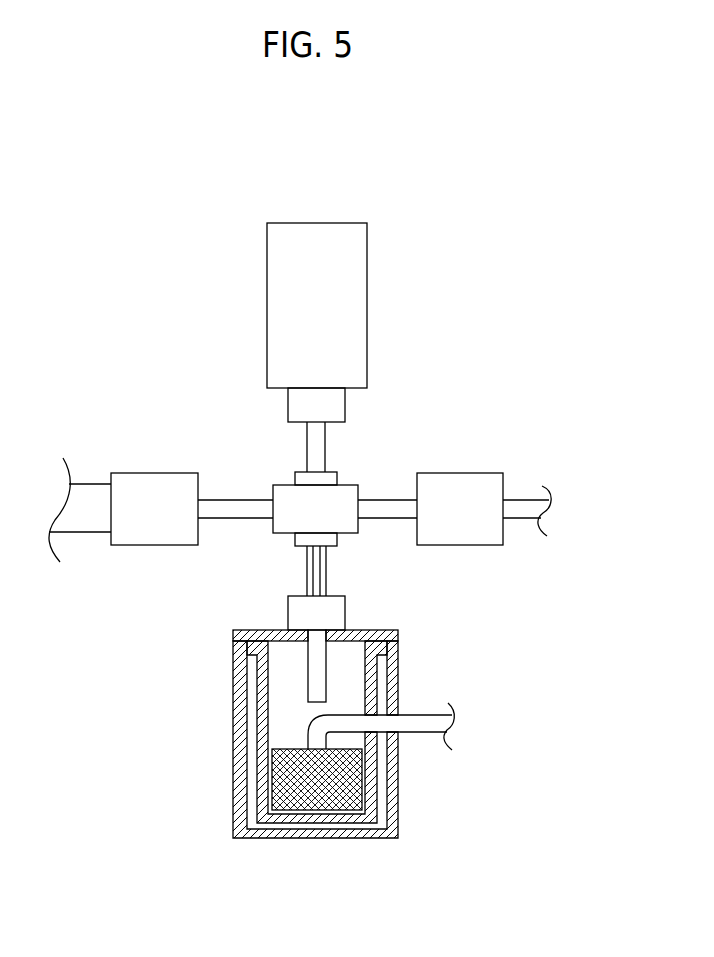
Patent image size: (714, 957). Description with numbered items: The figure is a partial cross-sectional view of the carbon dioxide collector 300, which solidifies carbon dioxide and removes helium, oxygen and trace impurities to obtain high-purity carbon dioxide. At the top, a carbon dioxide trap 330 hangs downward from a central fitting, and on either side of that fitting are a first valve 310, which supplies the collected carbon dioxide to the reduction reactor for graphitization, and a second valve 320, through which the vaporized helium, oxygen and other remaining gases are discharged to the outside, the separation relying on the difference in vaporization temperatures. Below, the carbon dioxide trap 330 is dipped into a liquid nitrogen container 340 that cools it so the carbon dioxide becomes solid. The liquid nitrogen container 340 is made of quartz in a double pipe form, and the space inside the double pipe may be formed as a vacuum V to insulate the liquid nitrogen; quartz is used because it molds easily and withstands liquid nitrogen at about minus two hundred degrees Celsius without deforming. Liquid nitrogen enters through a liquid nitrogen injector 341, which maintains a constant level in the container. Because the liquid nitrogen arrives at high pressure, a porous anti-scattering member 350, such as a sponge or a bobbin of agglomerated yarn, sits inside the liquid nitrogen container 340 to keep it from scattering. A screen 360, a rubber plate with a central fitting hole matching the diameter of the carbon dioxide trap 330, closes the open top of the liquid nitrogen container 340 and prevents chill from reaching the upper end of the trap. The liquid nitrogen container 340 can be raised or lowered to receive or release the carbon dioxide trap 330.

The carbon dioxide collector 300 is at (178, 216).
The first valve 310 is at (150, 490).
The second valve 320 is at (465, 492).
The carbon dioxide trap 330 is at (320, 668).
The liquid nitrogen container 340 is at (240, 750).
The liquid nitrogen injector 341 is at (423, 725).
The anti-scattering member 350 is at (318, 803).
The screen 360 is at (275, 640).
The vacuum V is at (252, 809).